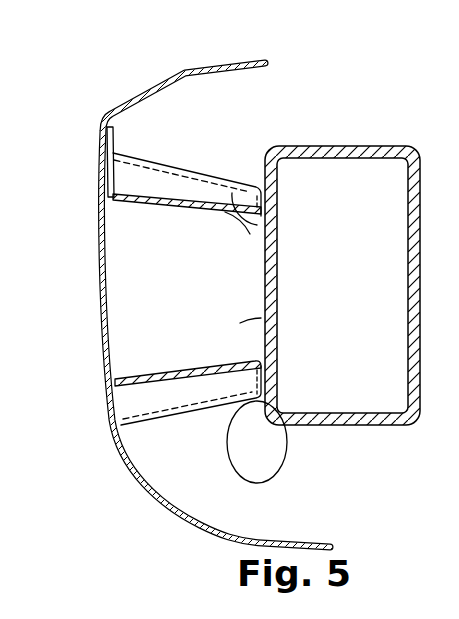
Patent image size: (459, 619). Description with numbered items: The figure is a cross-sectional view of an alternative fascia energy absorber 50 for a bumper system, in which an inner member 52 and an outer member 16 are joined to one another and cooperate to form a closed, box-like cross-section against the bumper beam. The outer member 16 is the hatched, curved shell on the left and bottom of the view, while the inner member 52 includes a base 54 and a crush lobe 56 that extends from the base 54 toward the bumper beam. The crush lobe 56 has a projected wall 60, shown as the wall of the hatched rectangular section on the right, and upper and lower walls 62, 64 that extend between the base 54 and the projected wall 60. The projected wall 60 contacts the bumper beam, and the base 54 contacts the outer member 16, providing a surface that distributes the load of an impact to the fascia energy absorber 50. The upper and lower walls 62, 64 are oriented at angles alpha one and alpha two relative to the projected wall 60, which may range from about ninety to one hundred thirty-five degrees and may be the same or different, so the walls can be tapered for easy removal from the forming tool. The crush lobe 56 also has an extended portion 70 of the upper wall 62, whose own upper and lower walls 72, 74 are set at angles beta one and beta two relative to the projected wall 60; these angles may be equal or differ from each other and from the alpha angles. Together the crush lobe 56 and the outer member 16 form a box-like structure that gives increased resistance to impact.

The outer member 16 is at (147, 89).
The fascia energy absorber 50 is at (191, 295).
The inner member 52 is at (276, 104).
The base 54 is at (114, 141).
The crush lobe 56 is at (128, 325).
The projected wall 60 is at (261, 275).
The upper wall 62 is at (173, 204).
The lower wall 64 is at (170, 374).
The extended portion 70 is at (153, 182).
The upper wall of extended portion 72 is at (226, 186).
The lower wall of extended portion 74 is at (200, 403).